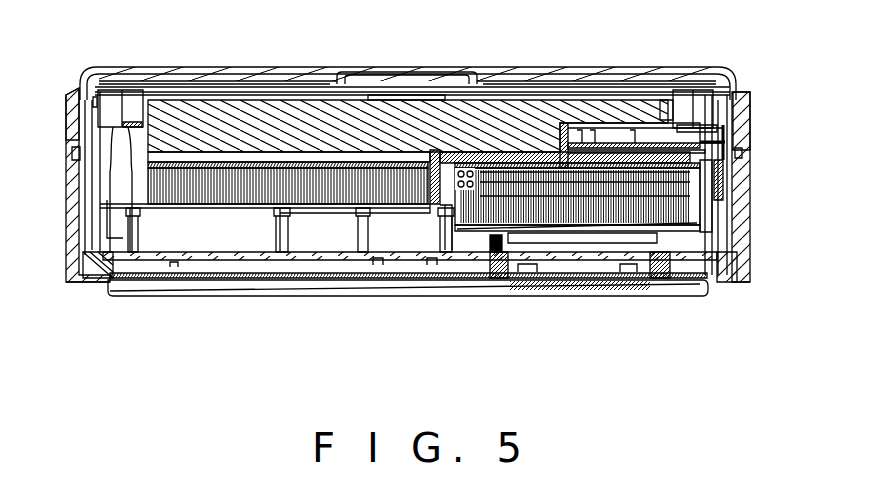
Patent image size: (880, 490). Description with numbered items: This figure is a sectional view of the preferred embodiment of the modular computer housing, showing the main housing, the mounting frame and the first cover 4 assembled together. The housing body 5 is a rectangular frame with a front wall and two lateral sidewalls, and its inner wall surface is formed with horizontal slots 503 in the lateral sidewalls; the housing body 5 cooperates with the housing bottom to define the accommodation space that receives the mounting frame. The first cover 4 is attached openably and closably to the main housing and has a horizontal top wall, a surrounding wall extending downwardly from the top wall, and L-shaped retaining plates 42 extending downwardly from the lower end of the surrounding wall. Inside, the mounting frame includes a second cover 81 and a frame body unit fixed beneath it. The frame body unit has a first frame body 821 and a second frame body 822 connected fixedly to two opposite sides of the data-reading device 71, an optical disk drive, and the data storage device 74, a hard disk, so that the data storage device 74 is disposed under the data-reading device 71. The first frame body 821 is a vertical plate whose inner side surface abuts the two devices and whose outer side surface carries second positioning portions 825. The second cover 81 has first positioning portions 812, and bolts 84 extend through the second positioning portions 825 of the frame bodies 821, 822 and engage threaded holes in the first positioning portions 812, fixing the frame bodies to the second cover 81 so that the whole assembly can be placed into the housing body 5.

The first cover 4 is at (297, 63).
The housing body 5 is at (746, 246).
The L-shaped retaining plates 42 is at (70, 163).
The data-reading device 71 is at (248, 124).
The data storage device 74 is at (322, 180).
The second cover 81 is at (567, 87).
The bolts 84 is at (117, 150).
The horizontal slots 503 is at (64, 138).
The first positioning portions 812 is at (687, 98).
The first frame body 821 is at (133, 129).
The second frame body 822 is at (722, 182).
The second positioning portions 825 is at (718, 120).